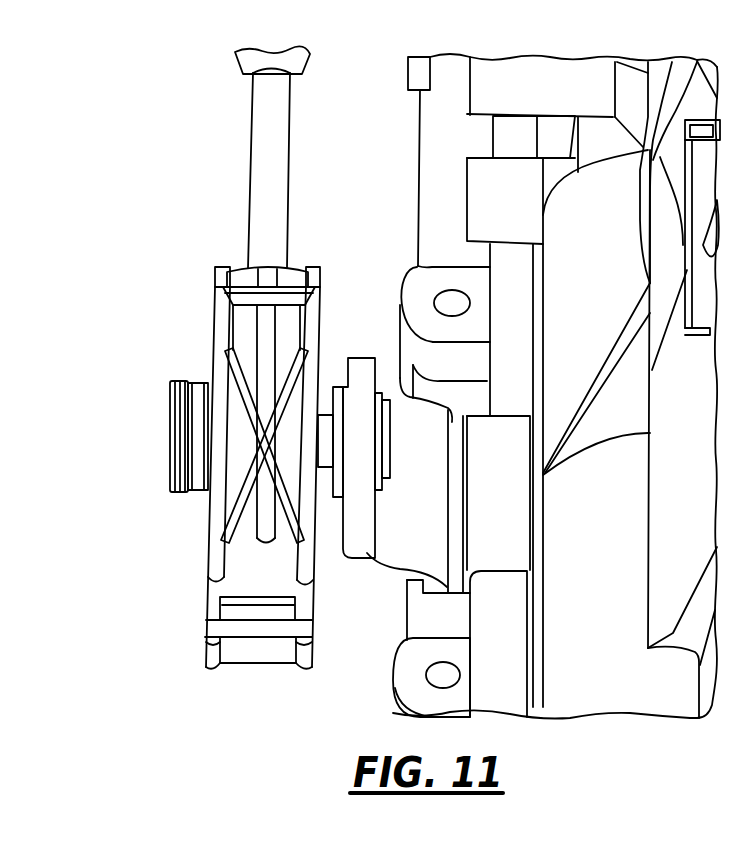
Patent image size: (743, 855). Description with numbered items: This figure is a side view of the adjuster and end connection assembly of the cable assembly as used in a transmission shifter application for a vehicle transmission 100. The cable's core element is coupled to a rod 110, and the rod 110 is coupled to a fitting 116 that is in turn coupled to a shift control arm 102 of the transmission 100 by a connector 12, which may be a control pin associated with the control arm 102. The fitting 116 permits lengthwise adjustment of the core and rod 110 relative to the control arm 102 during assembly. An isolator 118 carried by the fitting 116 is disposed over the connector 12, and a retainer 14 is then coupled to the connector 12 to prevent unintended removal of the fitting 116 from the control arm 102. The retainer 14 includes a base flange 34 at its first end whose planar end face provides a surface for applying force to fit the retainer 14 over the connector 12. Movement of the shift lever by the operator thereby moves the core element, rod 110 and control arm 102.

The transmission 100 is at (438, 122).
The shift control arm 102 is at (358, 553).
The rod 110 is at (292, 205).
The fitting 116 is at (217, 590).
The isolator 118 is at (196, 498).
The base flange 34 is at (180, 381).
The retainer 14 is at (170, 485).
The connector 12 is at (410, 439).